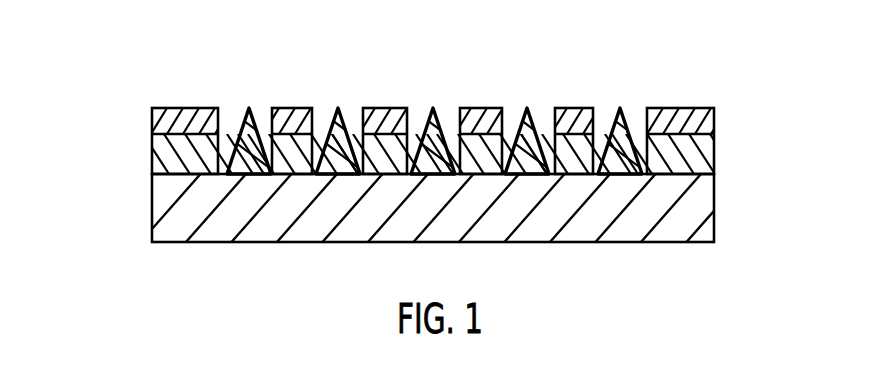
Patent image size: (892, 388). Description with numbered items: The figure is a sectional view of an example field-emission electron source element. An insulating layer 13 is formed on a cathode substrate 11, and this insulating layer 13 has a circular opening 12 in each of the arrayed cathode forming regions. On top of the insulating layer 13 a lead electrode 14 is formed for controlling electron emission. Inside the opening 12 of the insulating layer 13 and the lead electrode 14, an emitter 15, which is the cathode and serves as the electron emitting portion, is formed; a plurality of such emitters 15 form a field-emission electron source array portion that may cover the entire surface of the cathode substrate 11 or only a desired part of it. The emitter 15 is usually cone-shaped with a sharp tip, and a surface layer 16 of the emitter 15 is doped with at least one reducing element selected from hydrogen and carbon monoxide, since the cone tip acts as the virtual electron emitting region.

The cathode substrate 11 is at (713, 207).
The circular opening 12 is at (632, 120).
The insulating layer 13 is at (713, 152).
The lead electrode 14 is at (703, 107).
The emitter 15 is at (240, 153).
The surface layer 16 is at (249, 112).